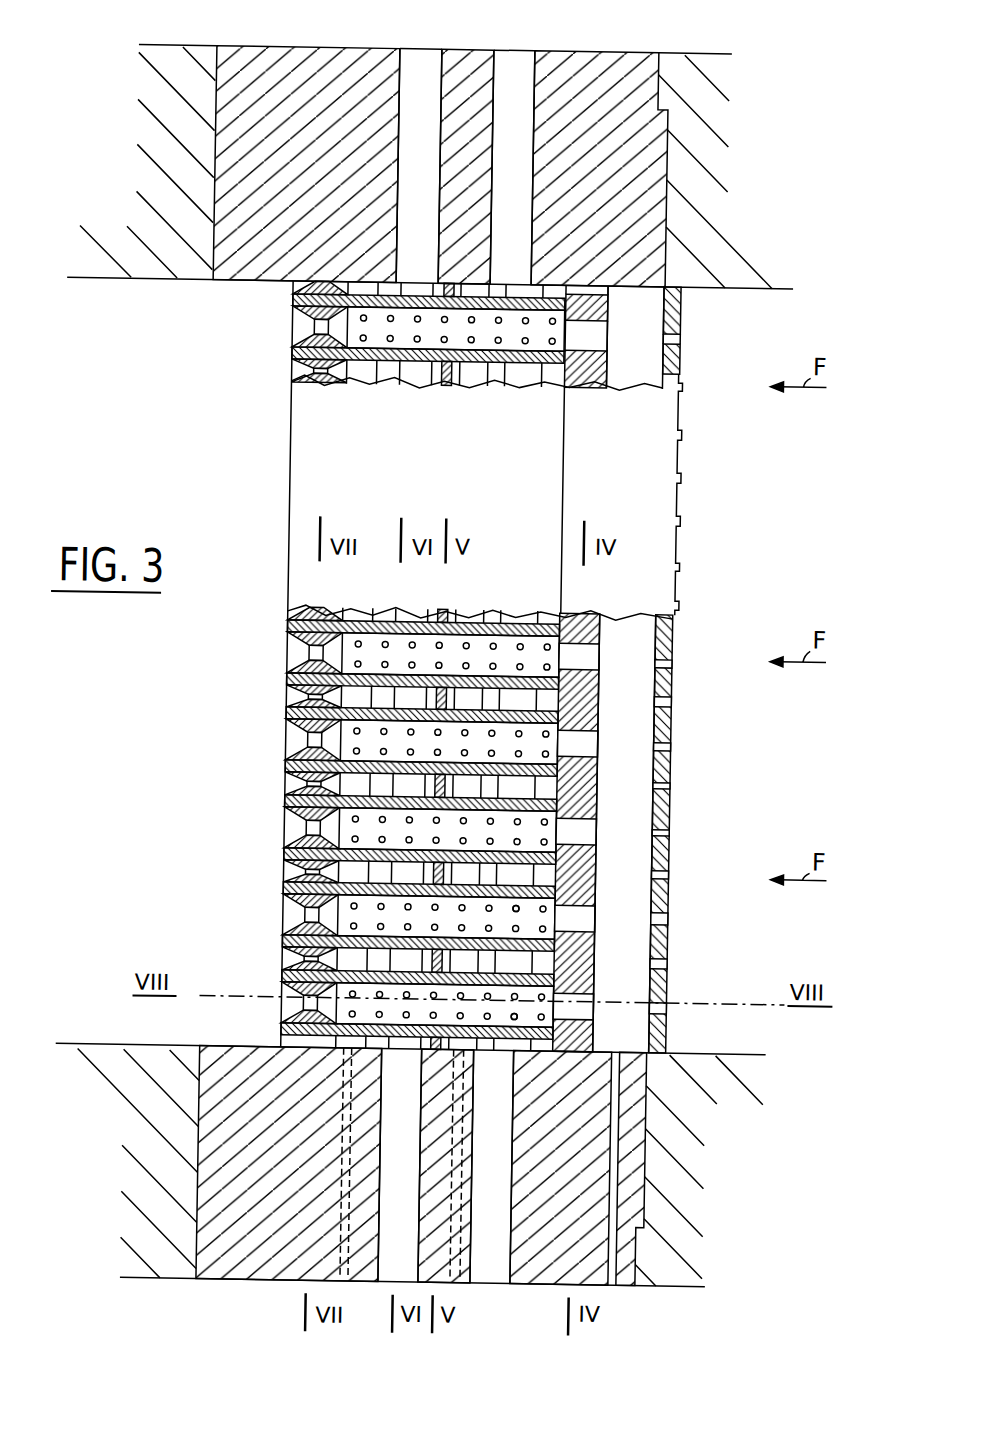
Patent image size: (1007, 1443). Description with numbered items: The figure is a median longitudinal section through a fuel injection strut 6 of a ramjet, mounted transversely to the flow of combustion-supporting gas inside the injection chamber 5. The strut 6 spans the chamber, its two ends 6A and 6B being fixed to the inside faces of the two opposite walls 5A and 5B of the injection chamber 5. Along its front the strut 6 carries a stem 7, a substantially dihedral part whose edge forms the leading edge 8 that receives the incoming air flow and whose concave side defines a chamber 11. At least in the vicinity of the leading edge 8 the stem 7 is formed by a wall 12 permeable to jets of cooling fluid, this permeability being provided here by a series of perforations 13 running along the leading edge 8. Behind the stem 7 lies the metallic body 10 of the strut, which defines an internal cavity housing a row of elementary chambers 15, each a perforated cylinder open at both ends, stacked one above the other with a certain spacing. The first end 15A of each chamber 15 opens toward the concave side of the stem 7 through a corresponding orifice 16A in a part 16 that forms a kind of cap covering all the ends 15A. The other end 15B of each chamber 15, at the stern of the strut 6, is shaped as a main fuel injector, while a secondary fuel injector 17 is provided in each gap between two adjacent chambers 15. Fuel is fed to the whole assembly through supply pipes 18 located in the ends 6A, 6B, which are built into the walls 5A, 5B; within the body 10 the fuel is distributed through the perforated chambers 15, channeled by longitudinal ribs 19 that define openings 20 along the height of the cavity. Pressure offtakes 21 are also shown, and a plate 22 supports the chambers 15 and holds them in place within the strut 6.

The injection chamber 5 is at (822, 761).
The wall of the injection chamber 5A is at (92, 160).
The wall of the injection chamber 5B is at (104, 1193).
The fuel injection strut 6 is at (214, 301).
The end of the strut 6A is at (221, 97).
The end of the strut 6B is at (240, 1262).
The stem 7 is at (690, 772).
The leading edge 8 is at (670, 812).
The metallic body 10 is at (258, 528).
The chamber 11 is at (640, 640).
The wall 12 is at (631, 846).
The perforations 13 is at (676, 466).
The elementary chambers 15 is at (290, 795).
The first end of the chamber 15A is at (522, 1018).
The other end of the chamber 15B is at (316, 1003).
The part forming a cap 16 is at (610, 357).
The orifice 16A is at (596, 830).
The secondary fuel injector 17 is at (288, 693).
The supply pipes 18 is at (396, 86).
The longitudinal ribs 19 is at (491, 384).
The openings 20 is at (490, 615).
The pressure offtakes 21 is at (355, 1168).
The plate 22 is at (440, 614).